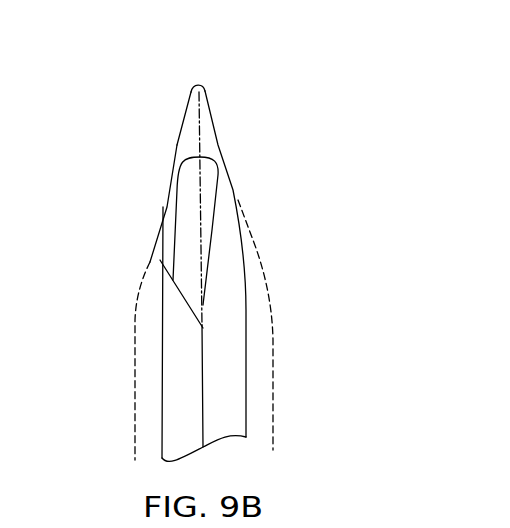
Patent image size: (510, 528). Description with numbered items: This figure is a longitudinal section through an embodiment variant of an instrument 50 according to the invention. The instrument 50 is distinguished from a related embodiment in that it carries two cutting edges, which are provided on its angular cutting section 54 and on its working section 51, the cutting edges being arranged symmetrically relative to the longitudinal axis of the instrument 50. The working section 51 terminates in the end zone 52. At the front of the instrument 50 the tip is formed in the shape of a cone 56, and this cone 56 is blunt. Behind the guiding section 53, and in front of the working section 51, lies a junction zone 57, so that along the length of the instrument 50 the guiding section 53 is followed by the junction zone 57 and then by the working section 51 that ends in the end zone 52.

The instrument 50 is at (268, 365).
The working section 51 is at (150, 364).
The end zone 52 is at (147, 213).
The guiding section 53 is at (182, 121).
The angular cutting section 54 is at (213, 163).
The cone 56 is at (201, 88).
The junction zone 57 is at (188, 198).